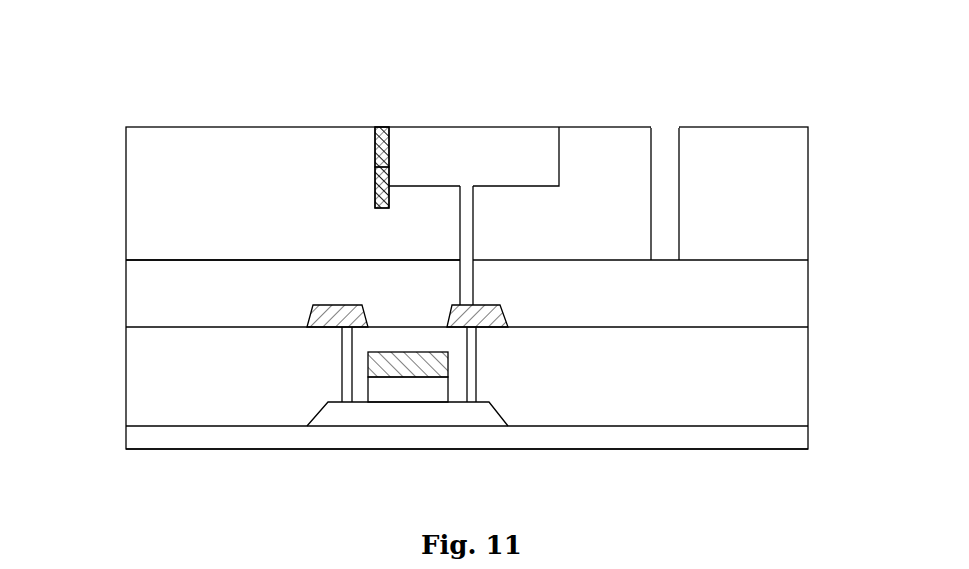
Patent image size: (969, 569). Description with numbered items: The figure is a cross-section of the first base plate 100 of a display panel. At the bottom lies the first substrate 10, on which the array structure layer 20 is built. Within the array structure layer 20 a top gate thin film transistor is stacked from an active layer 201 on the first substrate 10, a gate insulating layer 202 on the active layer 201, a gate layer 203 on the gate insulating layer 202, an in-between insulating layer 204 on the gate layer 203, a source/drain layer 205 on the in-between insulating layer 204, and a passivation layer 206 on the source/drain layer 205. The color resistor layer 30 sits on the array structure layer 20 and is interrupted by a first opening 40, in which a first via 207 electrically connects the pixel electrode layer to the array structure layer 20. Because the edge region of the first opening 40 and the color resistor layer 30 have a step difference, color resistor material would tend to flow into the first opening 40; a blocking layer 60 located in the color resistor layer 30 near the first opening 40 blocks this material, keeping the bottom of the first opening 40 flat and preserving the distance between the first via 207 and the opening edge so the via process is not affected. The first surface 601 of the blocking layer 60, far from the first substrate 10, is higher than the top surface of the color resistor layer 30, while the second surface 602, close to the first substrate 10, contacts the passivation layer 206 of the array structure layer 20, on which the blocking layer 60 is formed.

The first base plate 100 is at (139, 92).
The first substrate 10 is at (808, 441).
The array structure layer 20 is at (826, 272).
The color resistor layer 30 is at (826, 130).
The first opening 40 is at (490, 160).
The blocking layer 60 is at (375, 190).
The first surface 601 is at (382, 126).
The second surface 602 is at (389, 204).
The active layer 201 is at (310, 424).
The gate insulating layer 202 is at (432, 395).
The gate layer 203 is at (395, 368).
The in-between insulating layer 204 is at (126, 370).
The source/drain layer 205 is at (308, 323).
The passivation layer 206 is at (126, 282).
The first via 207 is at (475, 222).